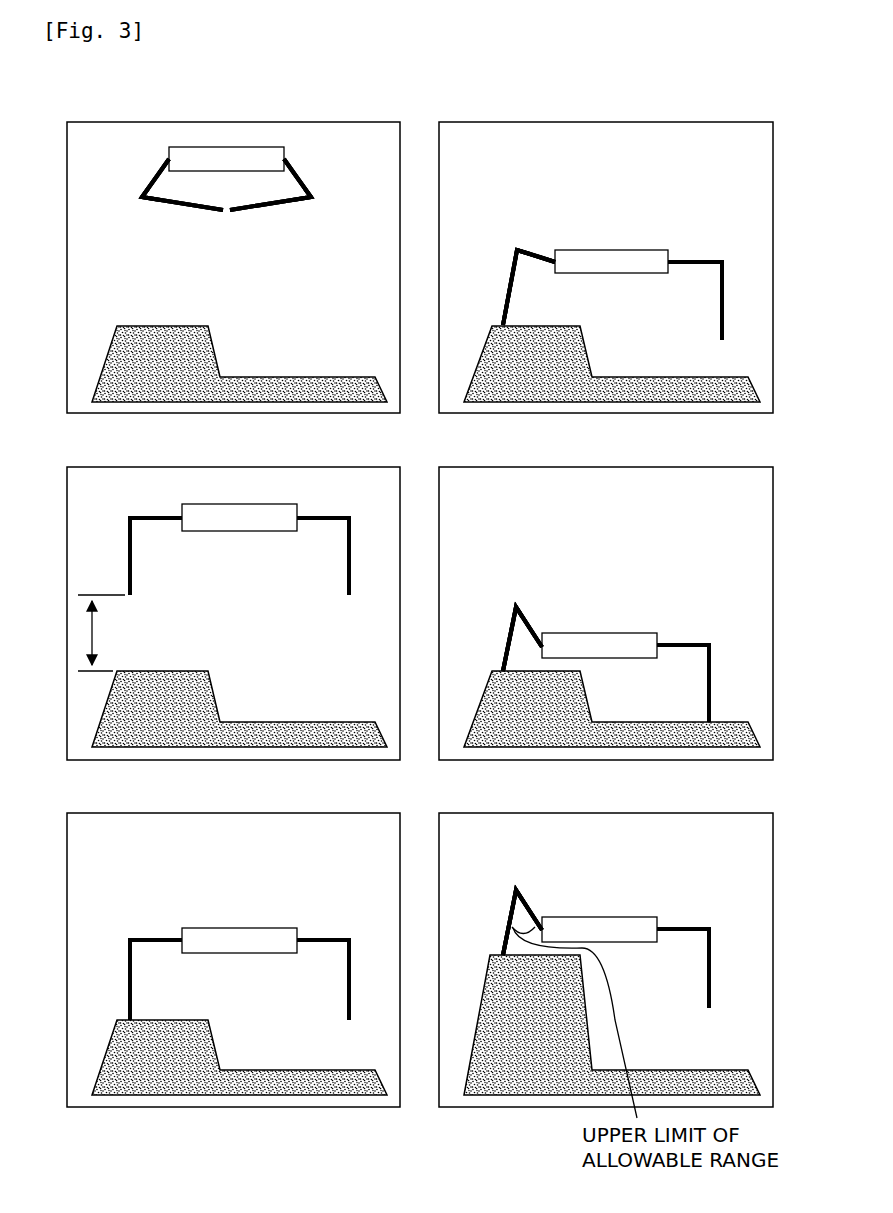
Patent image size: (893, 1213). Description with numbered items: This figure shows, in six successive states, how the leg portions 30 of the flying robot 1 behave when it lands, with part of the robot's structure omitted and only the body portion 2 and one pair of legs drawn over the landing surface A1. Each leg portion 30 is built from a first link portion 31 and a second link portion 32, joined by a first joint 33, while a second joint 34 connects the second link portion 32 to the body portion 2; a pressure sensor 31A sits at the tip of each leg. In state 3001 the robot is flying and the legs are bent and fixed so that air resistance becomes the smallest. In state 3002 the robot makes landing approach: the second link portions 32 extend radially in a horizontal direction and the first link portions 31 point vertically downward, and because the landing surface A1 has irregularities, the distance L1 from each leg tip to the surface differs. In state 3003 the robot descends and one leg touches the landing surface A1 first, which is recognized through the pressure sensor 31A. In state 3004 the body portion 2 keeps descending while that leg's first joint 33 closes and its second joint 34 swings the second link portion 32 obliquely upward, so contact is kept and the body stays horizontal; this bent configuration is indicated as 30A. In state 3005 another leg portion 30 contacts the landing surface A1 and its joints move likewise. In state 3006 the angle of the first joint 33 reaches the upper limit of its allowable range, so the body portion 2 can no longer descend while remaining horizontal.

The flying robot 1 is at (138, 250).
The body portion 2 is at (222, 147).
The leg portions 30 is at (324, 198).
The deformed support member 30A is at (127, 915).
The first link portion 31 is at (193, 210).
The pressure sensor 31A is at (128, 1017).
The second link portion 32 is at (155, 180).
The first joint 33 is at (142, 199).
The second joint 34 is at (167, 160).
The landing surface A1 is at (362, 377).
The distance L1 is at (103, 633).
The flying state 3001 is at (298, 121).
The landing approach state 3002 is at (298, 466).
The first contact state 3003 is at (298, 812).
The further descent state 3004 is at (670, 121).
The second contact state 3005 is at (670, 466).
The joint limit state 3006 is at (670, 812).